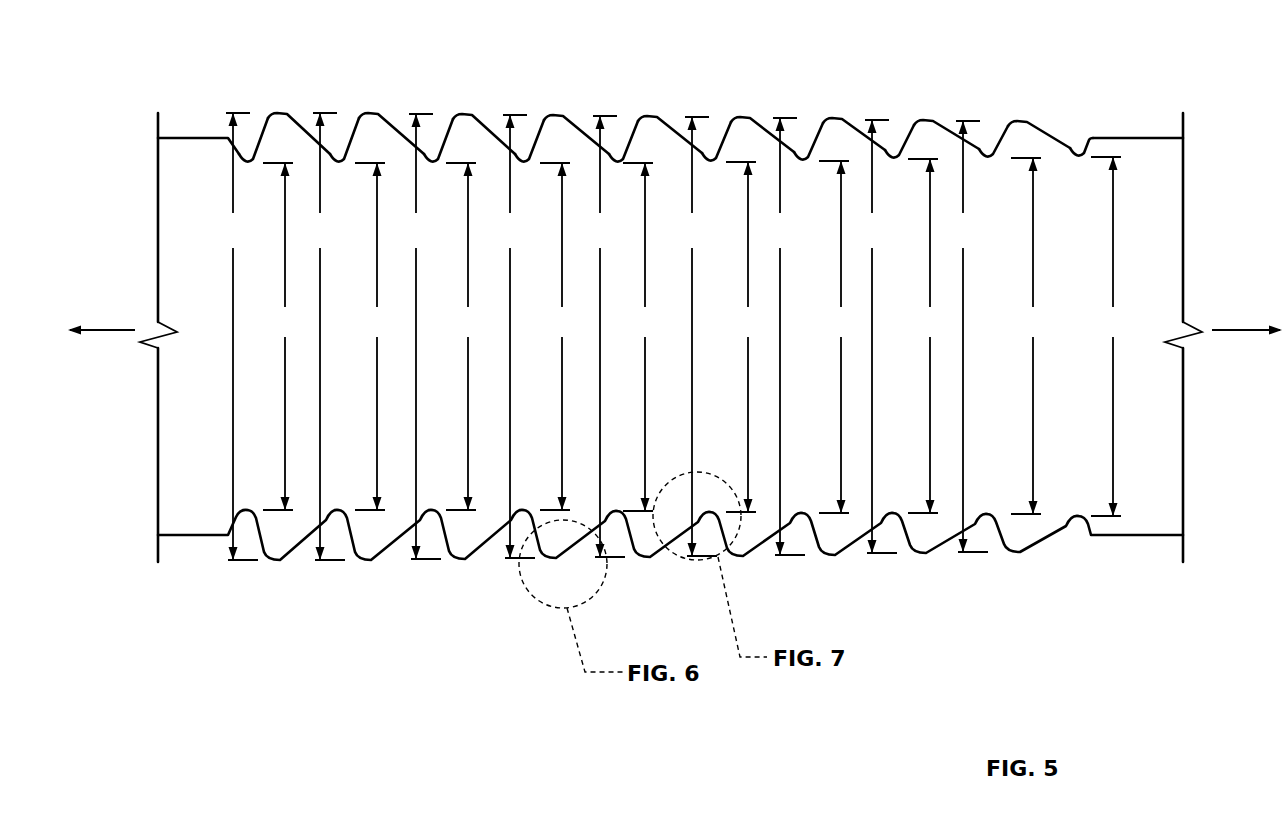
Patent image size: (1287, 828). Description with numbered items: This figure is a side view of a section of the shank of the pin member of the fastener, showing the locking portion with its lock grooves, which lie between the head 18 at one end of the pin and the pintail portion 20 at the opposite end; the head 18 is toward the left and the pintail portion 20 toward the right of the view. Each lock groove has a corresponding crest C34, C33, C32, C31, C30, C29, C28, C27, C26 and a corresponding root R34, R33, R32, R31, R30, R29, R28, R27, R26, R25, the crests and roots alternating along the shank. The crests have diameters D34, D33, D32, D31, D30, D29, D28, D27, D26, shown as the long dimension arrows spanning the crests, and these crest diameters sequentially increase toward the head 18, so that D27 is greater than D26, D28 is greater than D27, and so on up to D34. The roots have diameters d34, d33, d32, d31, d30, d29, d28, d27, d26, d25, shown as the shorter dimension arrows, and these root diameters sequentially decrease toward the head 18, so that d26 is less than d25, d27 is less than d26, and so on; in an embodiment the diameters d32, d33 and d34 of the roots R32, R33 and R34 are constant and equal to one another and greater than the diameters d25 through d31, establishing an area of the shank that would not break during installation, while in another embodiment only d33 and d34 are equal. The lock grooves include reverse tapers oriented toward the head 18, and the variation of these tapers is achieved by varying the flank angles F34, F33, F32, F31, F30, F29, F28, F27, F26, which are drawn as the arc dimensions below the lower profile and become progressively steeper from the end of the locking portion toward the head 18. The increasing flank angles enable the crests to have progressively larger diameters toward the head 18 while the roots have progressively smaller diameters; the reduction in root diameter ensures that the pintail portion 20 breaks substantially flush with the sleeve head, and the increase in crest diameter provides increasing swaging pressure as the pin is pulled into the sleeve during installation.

The head 18 is at (112, 332).
The pintail portion 20 is at (1240, 332).
The crest C34 is at (274, 113).
The crest C33 is at (365, 113).
The crest C32 is at (459, 114).
The crest C31 is at (550, 115).
The crest C30 is at (644, 116).
The crest C29 is at (737, 117).
The crest C28 is at (829, 118).
The crest C27 is at (920, 120).
The crest C26 is at (1014, 121).
The root R34 is at (248, 160).
The root R33 is at (339, 160).
The root R32 is at (433, 160).
The root R31 is at (524, 160).
The root R30 is at (618, 160).
The root R29 is at (711, 159).
The root R28 is at (803, 158).
The root R27 is at (894, 156).
The root R26 is at (988, 155).
The root R25 is at (1079, 154).
The crest diameter D34 is at (234, 336).
The crest diameter D33 is at (321, 336).
The crest diameter D32 is at (417, 336).
The crest diameter D31 is at (511, 336).
The crest diameter D30 is at (601, 336).
The crest diameter D29 is at (693, 336).
The crest diameter D28 is at (781, 336).
The crest diameter D27 is at (873, 336).
The crest diameter D26 is at (964, 336).
The root diameter d34 is at (284, 336).
The root diameter d33 is at (376, 336).
The root diameter d32 is at (467, 336).
The root diameter d31 is at (561, 336).
The root diameter d30 is at (644, 337).
The root diameter d29 is at (747, 337).
The root diameter d28 is at (840, 337).
The root diameter d27 is at (929, 336).
The root diameter d26 is at (1032, 336).
The root diameter d25 is at (1112, 336).
The flank angle F34 is at (338, 567).
The flank angle F33 is at (432, 567).
The flank angle F32 is at (523, 520).
The flank angle F31 is at (617, 520).
The flank angle F30 is at (710, 520).
The flank angle F29 is at (802, 527).
The flank angle F28 is at (893, 527).
The flank angle F27 is at (987, 527).
The flank angle F26 is at (1078, 527).